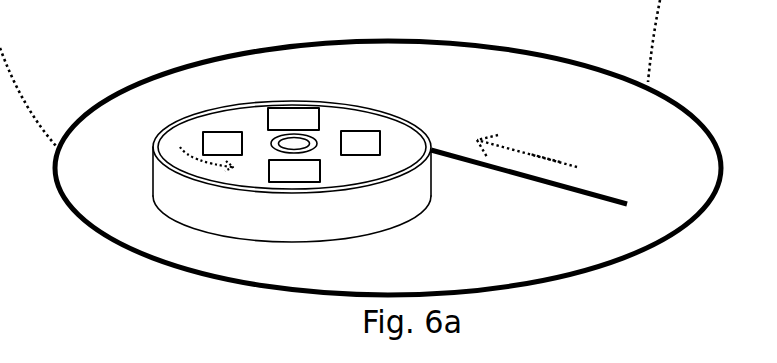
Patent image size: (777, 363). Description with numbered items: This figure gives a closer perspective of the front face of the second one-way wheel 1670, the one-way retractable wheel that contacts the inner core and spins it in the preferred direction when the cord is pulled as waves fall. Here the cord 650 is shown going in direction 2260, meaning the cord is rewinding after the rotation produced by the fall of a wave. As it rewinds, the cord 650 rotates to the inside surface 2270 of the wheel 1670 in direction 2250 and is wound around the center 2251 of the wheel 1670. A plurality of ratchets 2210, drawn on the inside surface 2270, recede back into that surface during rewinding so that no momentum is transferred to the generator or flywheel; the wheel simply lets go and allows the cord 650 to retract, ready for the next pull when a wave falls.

The ratchets 2210 is at (223, 140).
The direction 2250 is at (208, 165).
The center 2251 is at (270, 145).
The direction 2260 is at (527, 153).
The inside surface 2270 is at (400, 143).
The cord 650 is at (597, 192).
The second one-way wheel 1670 is at (432, 182).